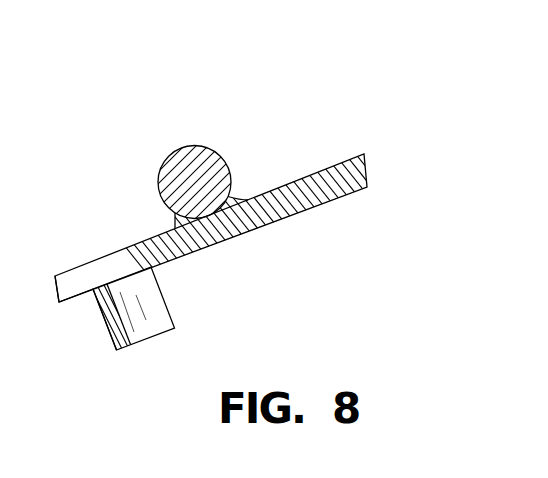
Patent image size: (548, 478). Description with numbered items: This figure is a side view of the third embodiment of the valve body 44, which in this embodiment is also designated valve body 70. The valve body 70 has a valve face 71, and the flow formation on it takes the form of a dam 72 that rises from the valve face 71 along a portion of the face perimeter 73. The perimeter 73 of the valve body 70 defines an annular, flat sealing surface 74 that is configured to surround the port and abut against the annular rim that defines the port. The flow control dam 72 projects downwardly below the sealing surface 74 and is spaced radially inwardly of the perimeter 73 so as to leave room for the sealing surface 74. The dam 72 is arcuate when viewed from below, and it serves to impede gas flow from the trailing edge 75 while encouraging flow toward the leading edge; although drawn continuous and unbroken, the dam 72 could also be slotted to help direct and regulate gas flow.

The valve body 44 is at (132, 170).
The valve body 70 is at (228, 128).
The valve face 71 is at (348, 196).
The dam 72 is at (122, 313).
The face perimeter 73 is at (57, 289).
The sealing surface 74 is at (76, 296).
The trailing edge 75 is at (60, 300).